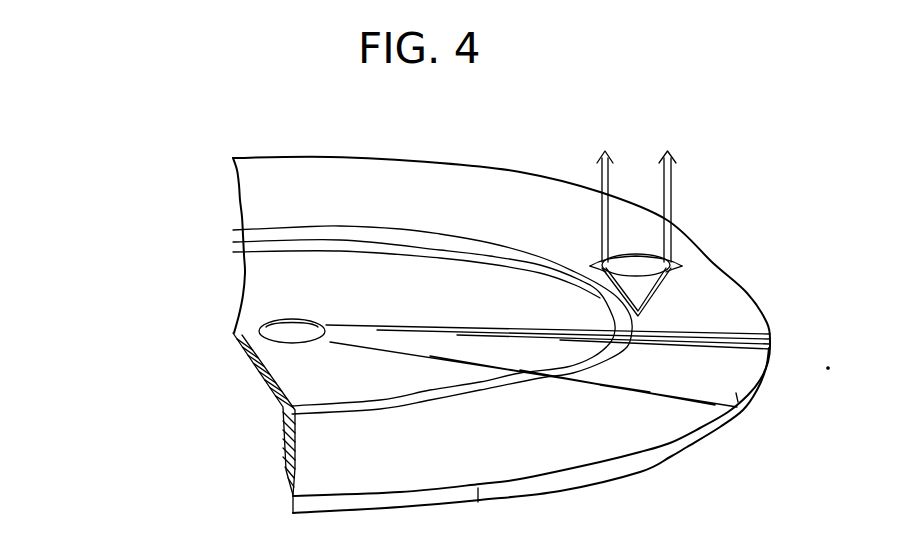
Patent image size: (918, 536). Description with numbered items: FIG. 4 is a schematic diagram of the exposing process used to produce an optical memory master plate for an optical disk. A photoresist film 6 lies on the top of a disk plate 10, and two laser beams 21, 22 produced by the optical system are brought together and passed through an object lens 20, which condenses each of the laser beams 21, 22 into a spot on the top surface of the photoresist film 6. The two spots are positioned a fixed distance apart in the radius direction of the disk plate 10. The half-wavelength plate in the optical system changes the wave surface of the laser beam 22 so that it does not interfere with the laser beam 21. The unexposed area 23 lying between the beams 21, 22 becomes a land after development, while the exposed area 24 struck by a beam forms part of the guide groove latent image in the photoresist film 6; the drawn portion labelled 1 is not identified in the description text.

The inner annular band 1 is at (450, 250).
The photoresist film 6 is at (742, 318).
The disk plate 10 is at (700, 436).
The object lens 20 is at (678, 264).
The laser beam 21 is at (672, 167).
The laser beam 22 is at (601, 168).
The unexposed area 23 is at (323, 228).
The exposed area 24 is at (487, 396).